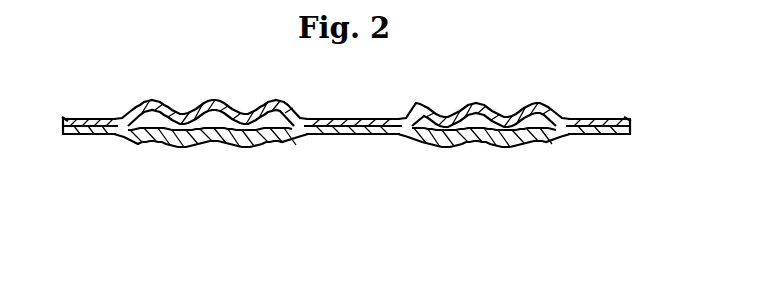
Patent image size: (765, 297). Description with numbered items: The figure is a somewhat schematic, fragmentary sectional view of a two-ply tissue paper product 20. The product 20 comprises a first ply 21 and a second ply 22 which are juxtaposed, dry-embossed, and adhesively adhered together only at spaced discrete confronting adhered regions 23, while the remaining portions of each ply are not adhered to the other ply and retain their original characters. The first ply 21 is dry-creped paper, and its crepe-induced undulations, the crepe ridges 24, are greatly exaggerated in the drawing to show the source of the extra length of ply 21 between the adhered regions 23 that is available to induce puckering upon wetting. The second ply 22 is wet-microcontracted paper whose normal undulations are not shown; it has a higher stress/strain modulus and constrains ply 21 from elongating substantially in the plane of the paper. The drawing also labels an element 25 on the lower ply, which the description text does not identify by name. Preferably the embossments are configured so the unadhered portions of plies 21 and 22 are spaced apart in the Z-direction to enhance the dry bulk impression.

The two-ply tissue paper product 20 is at (524, 169).
The first ply 21 is at (293, 116).
The second ply 22 is at (597, 137).
The adhered regions 23 is at (79, 109).
The crepe ridges 24 is at (258, 99).
The loops of second strand 25 is at (213, 147).